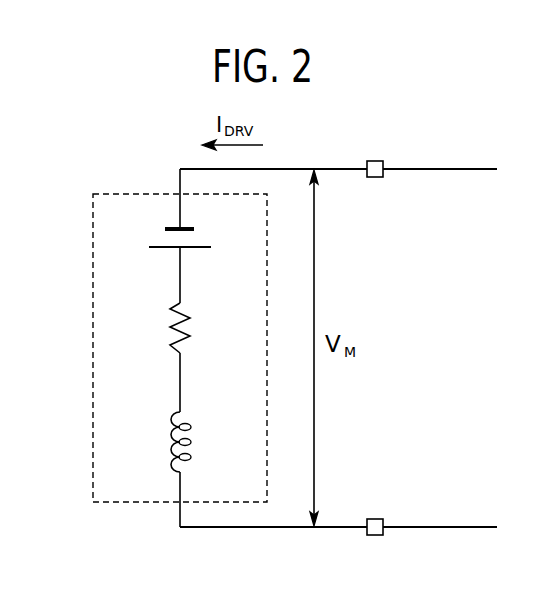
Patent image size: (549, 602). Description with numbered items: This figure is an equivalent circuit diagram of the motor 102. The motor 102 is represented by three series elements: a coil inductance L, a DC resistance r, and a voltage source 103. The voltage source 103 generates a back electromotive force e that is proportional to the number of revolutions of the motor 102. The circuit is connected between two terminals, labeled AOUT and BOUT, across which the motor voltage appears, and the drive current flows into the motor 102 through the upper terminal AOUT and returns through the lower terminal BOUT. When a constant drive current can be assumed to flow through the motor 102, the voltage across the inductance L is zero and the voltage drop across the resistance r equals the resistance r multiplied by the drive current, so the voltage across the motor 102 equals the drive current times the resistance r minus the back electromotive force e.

The motor 102 is at (143, 348).
The voltage source 103 is at (195, 262).
The back electromotive force e is at (192, 234).
The DC resistance r is at (191, 328).
The coil inductance L is at (193, 442).
The output terminal A AOUT is at (342, 155).
The output terminal B BOUT is at (342, 543).